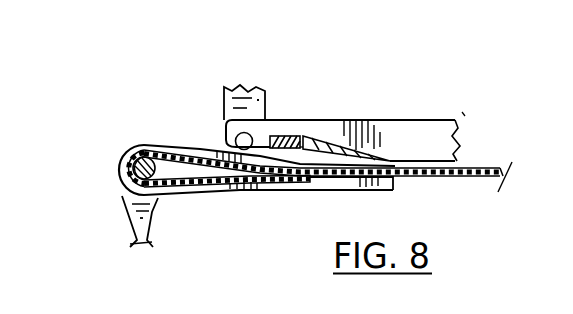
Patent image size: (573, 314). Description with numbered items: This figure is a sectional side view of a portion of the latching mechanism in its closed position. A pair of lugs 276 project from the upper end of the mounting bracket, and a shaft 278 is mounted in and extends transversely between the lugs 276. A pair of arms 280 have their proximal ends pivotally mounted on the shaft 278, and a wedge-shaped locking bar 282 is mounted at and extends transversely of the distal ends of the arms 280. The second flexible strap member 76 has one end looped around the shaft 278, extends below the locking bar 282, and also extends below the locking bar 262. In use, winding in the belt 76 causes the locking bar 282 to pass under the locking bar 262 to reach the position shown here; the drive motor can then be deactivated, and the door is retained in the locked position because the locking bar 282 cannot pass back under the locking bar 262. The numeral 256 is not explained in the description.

The second flexible strap member 76 is at (185, 148).
The support column 256 is at (240, 87).
The locking bar 262 is at (288, 133).
The lugs 276 is at (128, 208).
The shaft 278 is at (133, 150).
The arms 280 is at (303, 189).
The wedge-shaped locking bar 282 is at (327, 146).